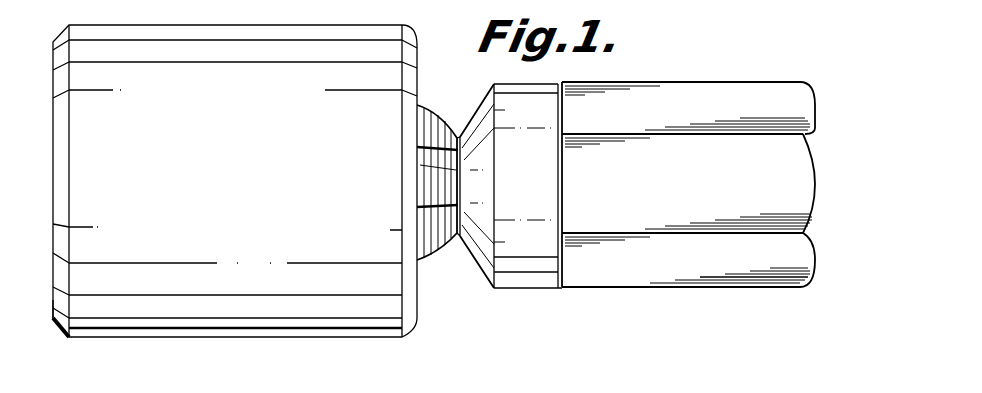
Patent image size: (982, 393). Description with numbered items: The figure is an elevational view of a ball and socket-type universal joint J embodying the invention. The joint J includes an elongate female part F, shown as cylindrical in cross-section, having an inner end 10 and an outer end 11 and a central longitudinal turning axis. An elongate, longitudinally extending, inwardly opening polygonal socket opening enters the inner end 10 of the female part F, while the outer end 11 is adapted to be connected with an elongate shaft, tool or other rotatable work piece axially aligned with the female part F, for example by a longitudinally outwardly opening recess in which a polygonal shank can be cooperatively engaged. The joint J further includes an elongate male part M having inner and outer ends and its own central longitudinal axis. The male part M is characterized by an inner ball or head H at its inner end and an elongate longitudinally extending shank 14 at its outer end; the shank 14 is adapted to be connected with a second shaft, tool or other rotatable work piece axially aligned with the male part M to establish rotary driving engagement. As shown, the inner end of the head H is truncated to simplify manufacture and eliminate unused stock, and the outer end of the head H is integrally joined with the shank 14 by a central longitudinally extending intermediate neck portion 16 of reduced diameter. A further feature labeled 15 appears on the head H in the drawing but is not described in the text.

The inner end 10 is at (418, 307).
The outer end 11 is at (56, 315).
The shank 14 is at (760, 276).
The hub groove 15 is at (436, 177).
The intermediate neck portion 16 is at (462, 182).
The female part F is at (207, 215).
The head H is at (432, 104).
The universal joint J is at (811, 82).
The male part M is at (650, 287).